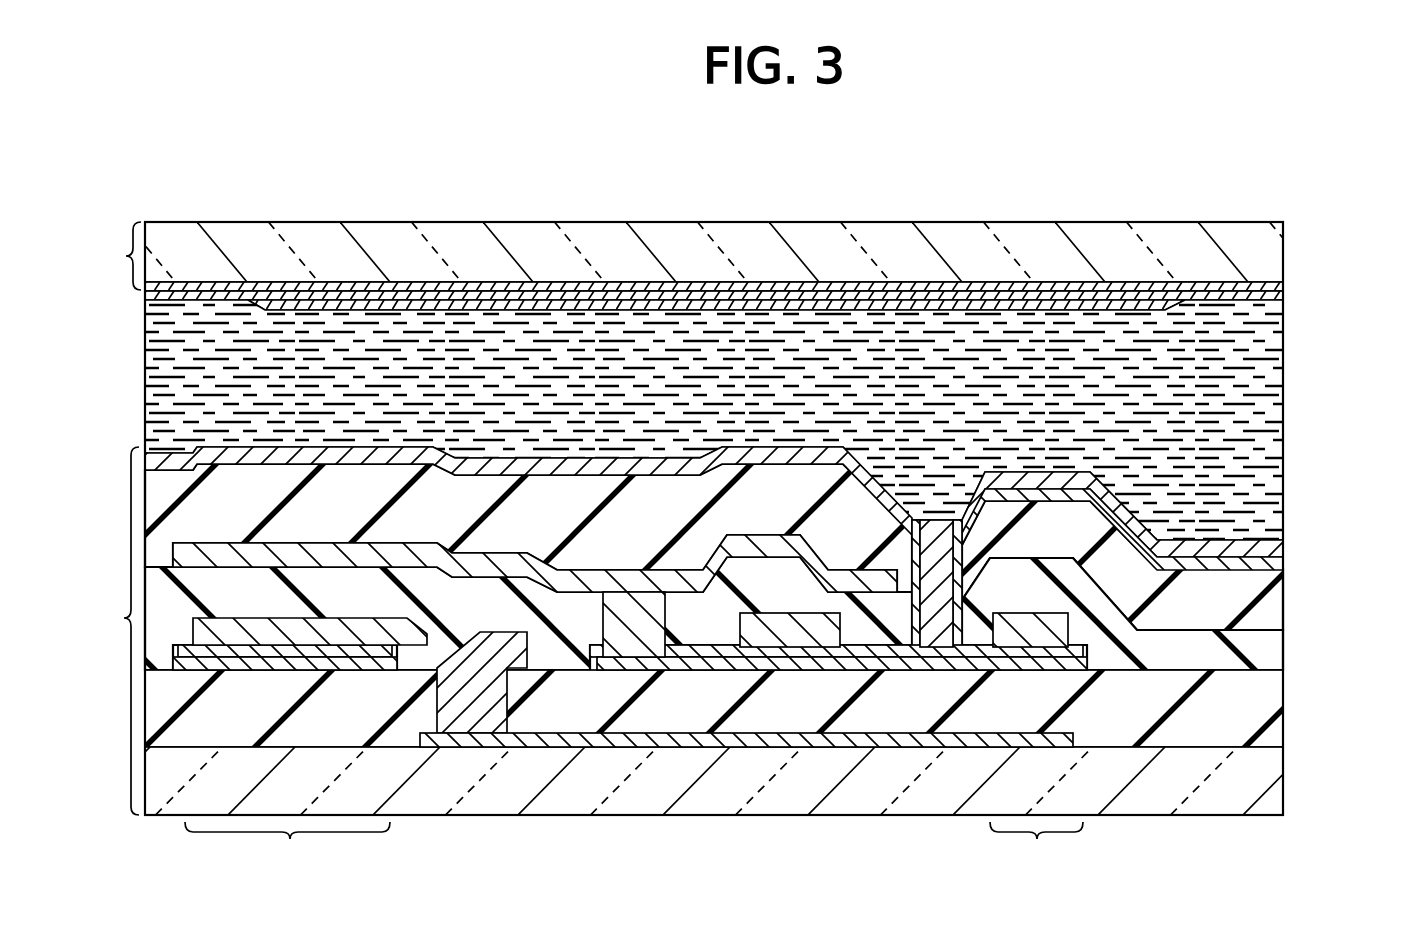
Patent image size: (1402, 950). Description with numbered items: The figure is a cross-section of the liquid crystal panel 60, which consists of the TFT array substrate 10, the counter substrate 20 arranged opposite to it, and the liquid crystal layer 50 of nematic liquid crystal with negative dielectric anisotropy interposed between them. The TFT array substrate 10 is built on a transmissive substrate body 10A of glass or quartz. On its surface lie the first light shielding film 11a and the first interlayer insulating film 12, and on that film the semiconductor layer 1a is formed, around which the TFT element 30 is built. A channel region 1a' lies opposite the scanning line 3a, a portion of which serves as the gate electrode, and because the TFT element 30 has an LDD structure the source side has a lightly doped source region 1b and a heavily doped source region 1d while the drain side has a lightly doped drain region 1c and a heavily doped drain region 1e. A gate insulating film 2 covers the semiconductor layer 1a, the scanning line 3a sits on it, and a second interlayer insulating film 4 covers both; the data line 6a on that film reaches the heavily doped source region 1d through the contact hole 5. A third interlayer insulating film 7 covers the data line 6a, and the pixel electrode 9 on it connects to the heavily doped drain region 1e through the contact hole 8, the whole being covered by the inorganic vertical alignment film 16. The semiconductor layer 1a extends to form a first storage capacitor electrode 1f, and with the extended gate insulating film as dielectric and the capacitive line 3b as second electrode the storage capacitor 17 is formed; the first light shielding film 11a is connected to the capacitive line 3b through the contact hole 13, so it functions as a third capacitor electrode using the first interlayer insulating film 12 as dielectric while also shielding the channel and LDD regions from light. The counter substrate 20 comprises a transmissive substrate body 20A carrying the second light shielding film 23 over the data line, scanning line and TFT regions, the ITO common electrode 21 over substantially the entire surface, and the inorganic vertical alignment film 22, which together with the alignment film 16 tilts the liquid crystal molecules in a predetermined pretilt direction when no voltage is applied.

The liquid crystal panel 60 is at (280, 158).
The second light shielding film 23 is at (427, 288).
The contact hole 8 is at (953, 550).
The counter substrate 20 is at (114, 256).
The substrate body 20A is at (1283, 245).
The common electrode 21 is at (1283, 286).
The alignment film 22 is at (1283, 302).
The liquid crystal layer 50 is at (1283, 400).
The alignment film 16 is at (1283, 548).
The pixel electrode 9 is at (1283, 566).
The third interlayer insulating film 7 is at (1283, 607).
The second interlayer insulating film 4 is at (1283, 650).
The first interlayer insulating film 12 is at (1283, 723).
The substrate body 10A is at (1283, 770).
The TFT array substrate 10 is at (113, 631).
The data line 6a is at (506, 558).
The contact hole 5 is at (641, 588).
The scanning line 3a is at (775, 627).
The capacitive line 3b is at (355, 628).
The gate insulating film 2 is at (1090, 660).
The first storage capacitor electrode 1f is at (242, 672).
The heavily doped source region 1d is at (624, 672).
The lightly doped source region 1b is at (732, 672).
The channel region 1a' is at (773, 702).
The lightly doped drain region 1c is at (842, 672).
The heavily doped drain region 1e is at (907, 672).
The semiconductor layer 1a is at (630, 774).
The TFT element 30 is at (788, 730).
The first light shielding film 11a is at (831, 749).
The contact hole 13 is at (494, 708).
The storage capacitor 17 is at (634, 850).